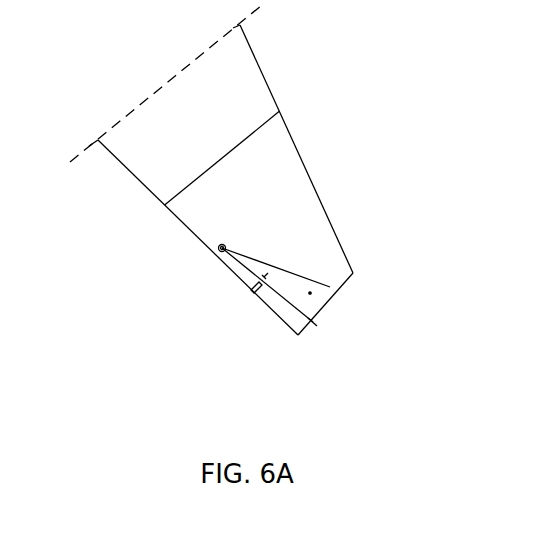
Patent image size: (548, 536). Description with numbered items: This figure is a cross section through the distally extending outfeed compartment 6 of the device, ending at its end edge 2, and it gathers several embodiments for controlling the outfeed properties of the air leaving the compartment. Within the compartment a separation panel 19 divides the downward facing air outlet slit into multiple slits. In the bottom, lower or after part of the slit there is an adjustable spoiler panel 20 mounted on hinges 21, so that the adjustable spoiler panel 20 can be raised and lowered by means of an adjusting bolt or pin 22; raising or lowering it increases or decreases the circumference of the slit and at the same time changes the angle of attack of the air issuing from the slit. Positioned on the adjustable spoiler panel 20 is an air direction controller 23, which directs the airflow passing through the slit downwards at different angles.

The end edge 2 is at (326, 308).
The outfeed compartment 6 is at (263, 75).
The separation panel 19 is at (190, 211).
The adjustable spoiler panel 20 is at (284, 308).
The hinges 21 is at (218, 252).
The adjusting bolt or pin 22 is at (250, 286).
The air direction controller 23 is at (311, 292).